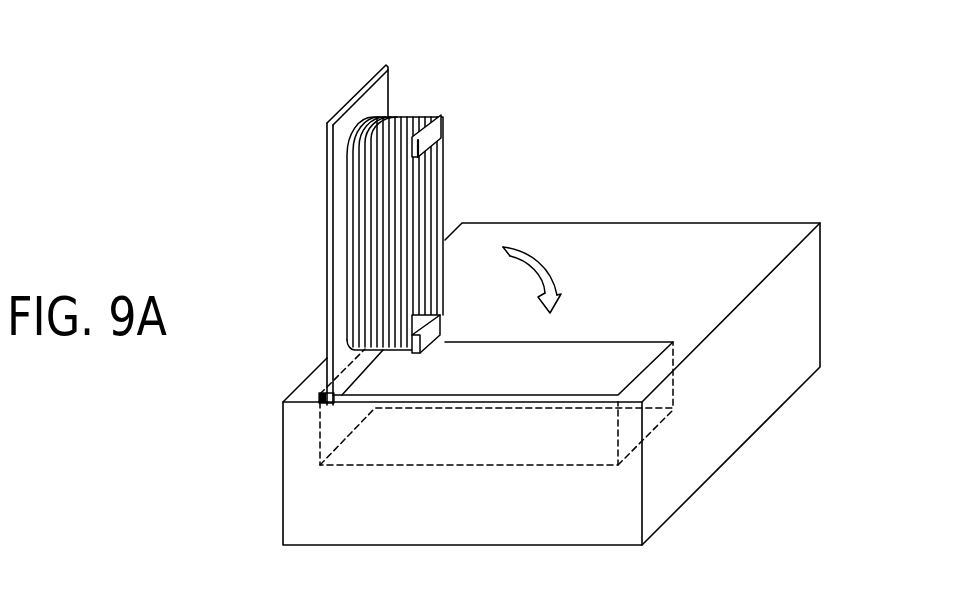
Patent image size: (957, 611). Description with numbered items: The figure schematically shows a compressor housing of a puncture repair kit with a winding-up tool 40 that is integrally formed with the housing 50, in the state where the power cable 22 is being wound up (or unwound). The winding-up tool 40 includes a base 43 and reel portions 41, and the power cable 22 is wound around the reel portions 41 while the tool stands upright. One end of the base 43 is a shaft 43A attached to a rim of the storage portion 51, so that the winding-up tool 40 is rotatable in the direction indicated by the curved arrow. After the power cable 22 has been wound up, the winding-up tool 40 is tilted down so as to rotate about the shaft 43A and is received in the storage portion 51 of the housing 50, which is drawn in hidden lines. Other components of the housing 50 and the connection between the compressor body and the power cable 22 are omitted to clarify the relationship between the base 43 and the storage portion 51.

The power cable 22 is at (437, 203).
The winding-up tool 40 is at (402, 102).
The reel portions 41 is at (442, 129).
The base 43 is at (300, 251).
The shaft 43A is at (318, 403).
The housing 50 is at (805, 340).
The storage portion 51 is at (650, 418).